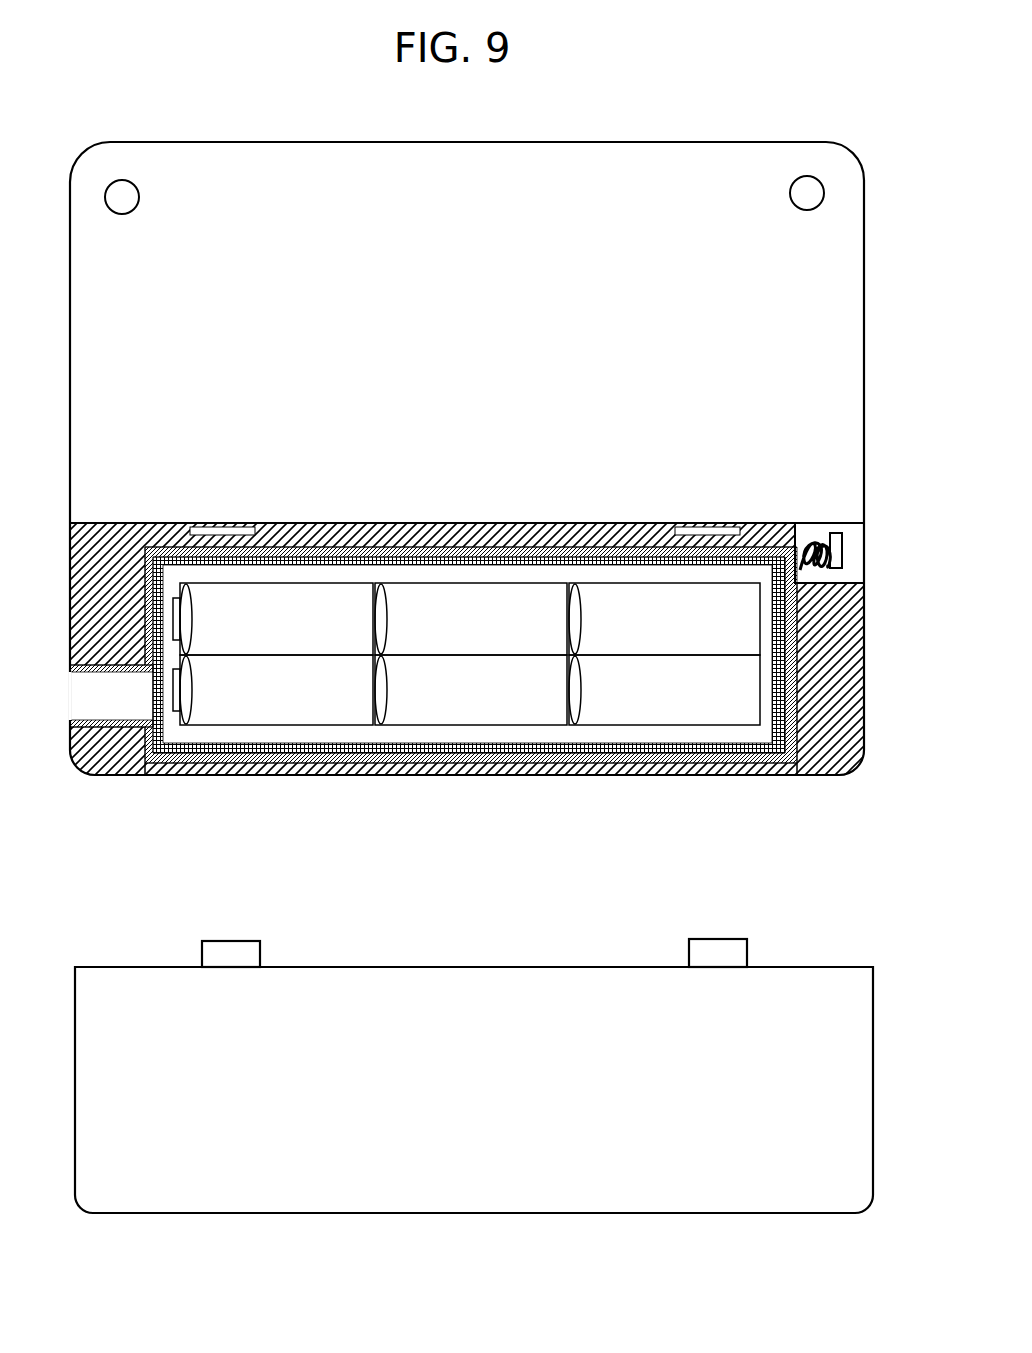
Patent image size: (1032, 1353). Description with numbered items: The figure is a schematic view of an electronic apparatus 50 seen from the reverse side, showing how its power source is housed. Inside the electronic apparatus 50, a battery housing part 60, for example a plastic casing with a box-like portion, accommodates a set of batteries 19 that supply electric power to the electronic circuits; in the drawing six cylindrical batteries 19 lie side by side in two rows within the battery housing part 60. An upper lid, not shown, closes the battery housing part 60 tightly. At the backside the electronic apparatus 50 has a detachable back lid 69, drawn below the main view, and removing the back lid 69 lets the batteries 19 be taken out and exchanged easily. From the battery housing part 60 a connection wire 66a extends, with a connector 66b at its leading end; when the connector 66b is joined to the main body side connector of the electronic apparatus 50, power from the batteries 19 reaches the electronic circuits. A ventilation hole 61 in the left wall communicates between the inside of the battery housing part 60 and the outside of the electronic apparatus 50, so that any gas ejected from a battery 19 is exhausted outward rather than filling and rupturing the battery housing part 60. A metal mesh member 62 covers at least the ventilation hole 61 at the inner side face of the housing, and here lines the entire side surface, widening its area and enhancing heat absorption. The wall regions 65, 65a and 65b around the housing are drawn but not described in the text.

The electronic apparatus 50 is at (392, 142).
The batteries 19 is at (335, 698).
The battery housing part 60 is at (530, 770).
The ventilation hole 61 is at (88, 685).
The mesh member 62 is at (153, 695).
The holder frame 65 is at (847, 637).
The side wall portion 65a is at (847, 682).
The pocket 65b is at (857, 567).
The connection wire 66a is at (812, 542).
The connector 66b is at (842, 533).
The back lid 69 is at (787, 965).